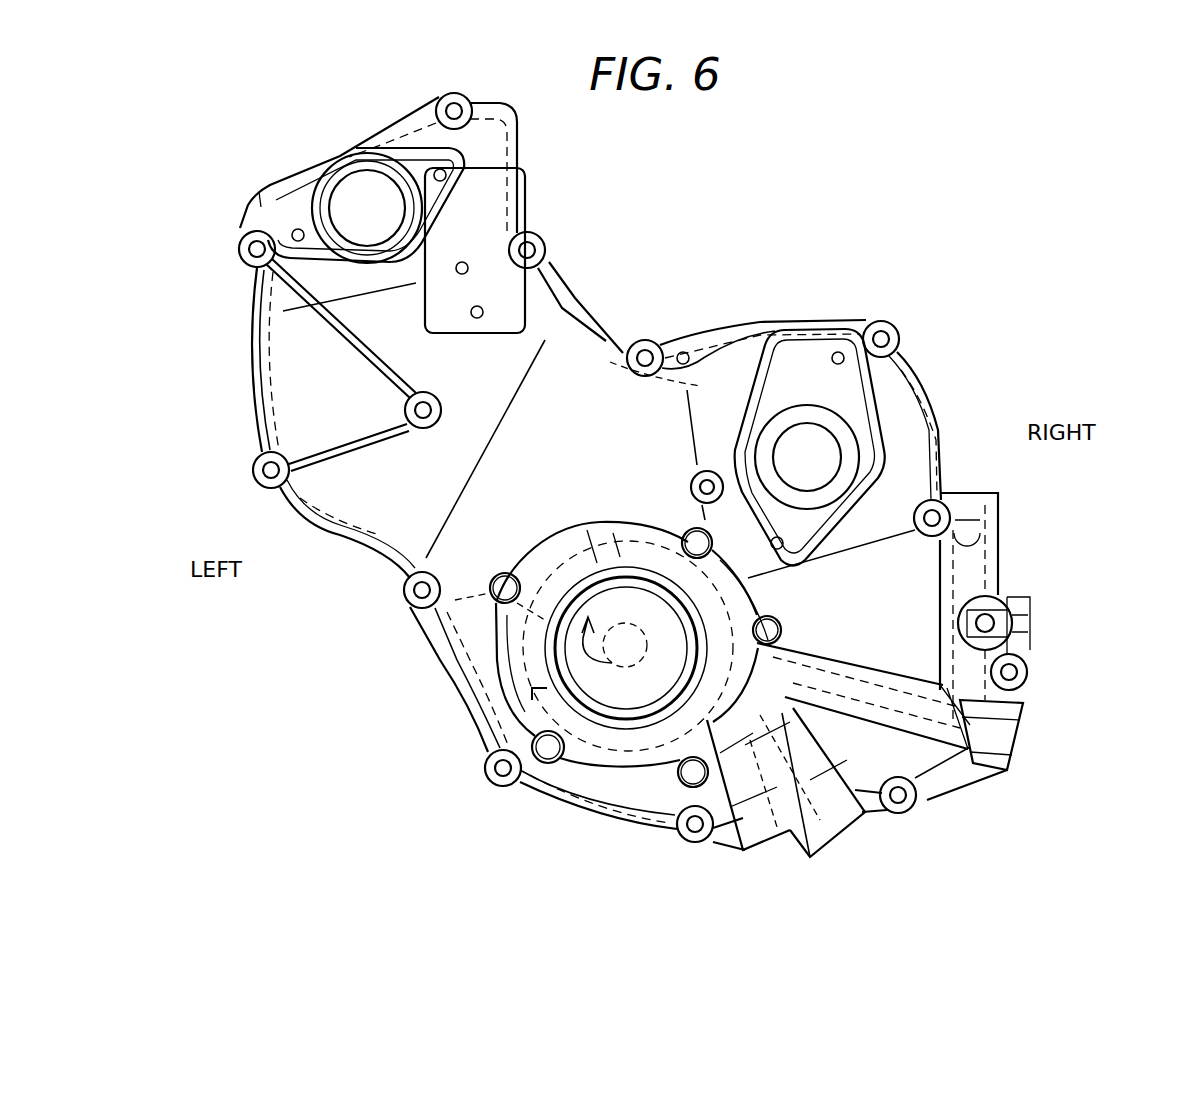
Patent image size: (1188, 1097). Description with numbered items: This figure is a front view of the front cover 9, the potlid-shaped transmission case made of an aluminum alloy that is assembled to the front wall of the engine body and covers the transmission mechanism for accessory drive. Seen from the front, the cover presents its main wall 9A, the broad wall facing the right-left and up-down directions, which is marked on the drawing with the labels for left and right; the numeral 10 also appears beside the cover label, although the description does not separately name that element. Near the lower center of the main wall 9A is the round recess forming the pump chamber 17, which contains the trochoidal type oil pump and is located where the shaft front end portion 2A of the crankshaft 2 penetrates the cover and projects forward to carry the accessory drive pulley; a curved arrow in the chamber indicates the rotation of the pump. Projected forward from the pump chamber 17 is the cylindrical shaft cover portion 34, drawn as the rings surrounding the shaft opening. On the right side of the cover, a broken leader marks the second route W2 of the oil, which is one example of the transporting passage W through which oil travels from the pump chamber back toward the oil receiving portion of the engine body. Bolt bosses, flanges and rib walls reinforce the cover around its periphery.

The front cover 9 is at (669, 475).
The cover body 10 is at (922, 385).
The main wall 9A is at (633, 420).
The second route W2 is at (1048, 631).
The transporting passage W is at (960, 577).
The pump chamber 17 is at (585, 662).
The cylindrical shaft cover portion 34 is at (531, 692).
The shaft front end portion 2A is at (618, 698).
The crankshaft 2 is at (610, 667).